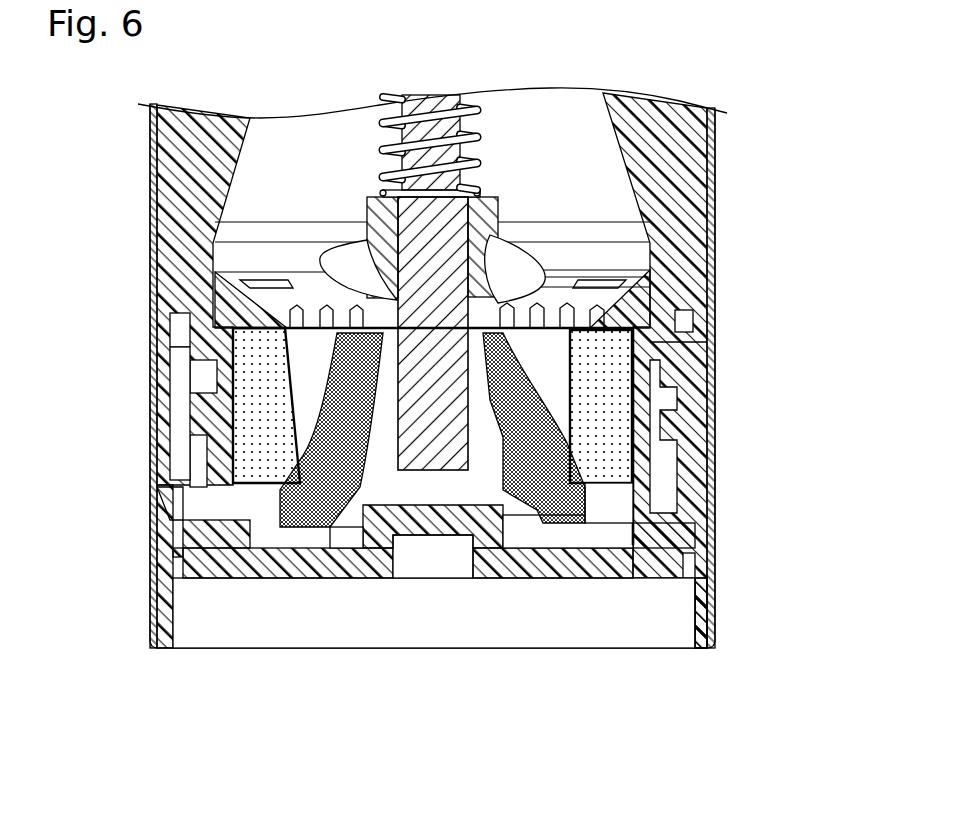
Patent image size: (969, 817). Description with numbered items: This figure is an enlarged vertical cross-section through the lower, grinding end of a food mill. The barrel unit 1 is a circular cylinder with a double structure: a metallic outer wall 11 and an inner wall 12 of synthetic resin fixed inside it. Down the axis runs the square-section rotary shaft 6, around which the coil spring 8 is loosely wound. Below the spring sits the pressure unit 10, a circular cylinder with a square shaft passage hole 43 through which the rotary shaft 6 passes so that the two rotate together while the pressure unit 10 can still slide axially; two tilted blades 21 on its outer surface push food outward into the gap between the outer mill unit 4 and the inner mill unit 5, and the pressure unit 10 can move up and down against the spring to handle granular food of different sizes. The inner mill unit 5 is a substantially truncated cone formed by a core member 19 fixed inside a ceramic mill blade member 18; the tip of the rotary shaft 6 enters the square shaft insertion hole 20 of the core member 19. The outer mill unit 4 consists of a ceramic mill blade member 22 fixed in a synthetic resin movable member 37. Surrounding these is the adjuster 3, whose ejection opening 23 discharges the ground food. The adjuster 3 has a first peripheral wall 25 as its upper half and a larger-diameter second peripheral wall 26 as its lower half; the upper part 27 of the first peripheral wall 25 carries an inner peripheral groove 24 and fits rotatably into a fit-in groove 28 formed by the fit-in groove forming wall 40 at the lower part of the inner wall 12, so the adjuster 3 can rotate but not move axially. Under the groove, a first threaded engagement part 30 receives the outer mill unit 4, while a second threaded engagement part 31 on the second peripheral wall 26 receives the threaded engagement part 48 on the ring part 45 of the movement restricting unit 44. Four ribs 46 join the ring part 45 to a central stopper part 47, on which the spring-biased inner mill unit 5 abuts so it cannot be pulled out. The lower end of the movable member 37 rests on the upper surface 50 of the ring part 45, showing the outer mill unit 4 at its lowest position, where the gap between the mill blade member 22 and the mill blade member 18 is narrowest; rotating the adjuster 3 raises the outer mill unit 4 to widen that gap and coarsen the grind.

The barrel unit 1 is at (150, 180).
The adjuster 3 is at (152, 580).
The outer mill unit 4 is at (243, 423).
The inner mill unit 5 is at (593, 505).
The rotary shaft 6 is at (443, 95).
The coil spring 8 is at (480, 113).
The pressure unit 10 is at (490, 197).
The outer wall 11 is at (157, 250).
The inner wall 12 is at (170, 297).
The mill blade member 18 is at (563, 530).
The core member 19 is at (447, 540).
The shaft insertion hole 20 is at (372, 545).
The blades 21 is at (340, 253).
The mill blade member 22 is at (257, 547).
The ejection opening 23 is at (327, 620).
The inner peripheral groove 24 is at (188, 343).
The first peripheral wall 25 is at (185, 365).
The second peripheral wall 26 is at (162, 514).
The upper part 27 is at (687, 322).
The fit-in groove 28 is at (693, 327).
The first threaded engagement part 30 is at (667, 387).
The second threaded engagement part 31 is at (690, 558).
The movable member 37 is at (214, 565).
The fit-in groove forming wall 40 is at (680, 342).
The shaft passage hole 43 is at (395, 223).
The movement restricting unit 44 is at (517, 547).
The ring part 45 is at (210, 530).
The ribs 46 is at (300, 567).
The stopper part 47 is at (425, 560).
The threaded engagement part 48 is at (692, 570).
The upper surface 50 is at (680, 522).